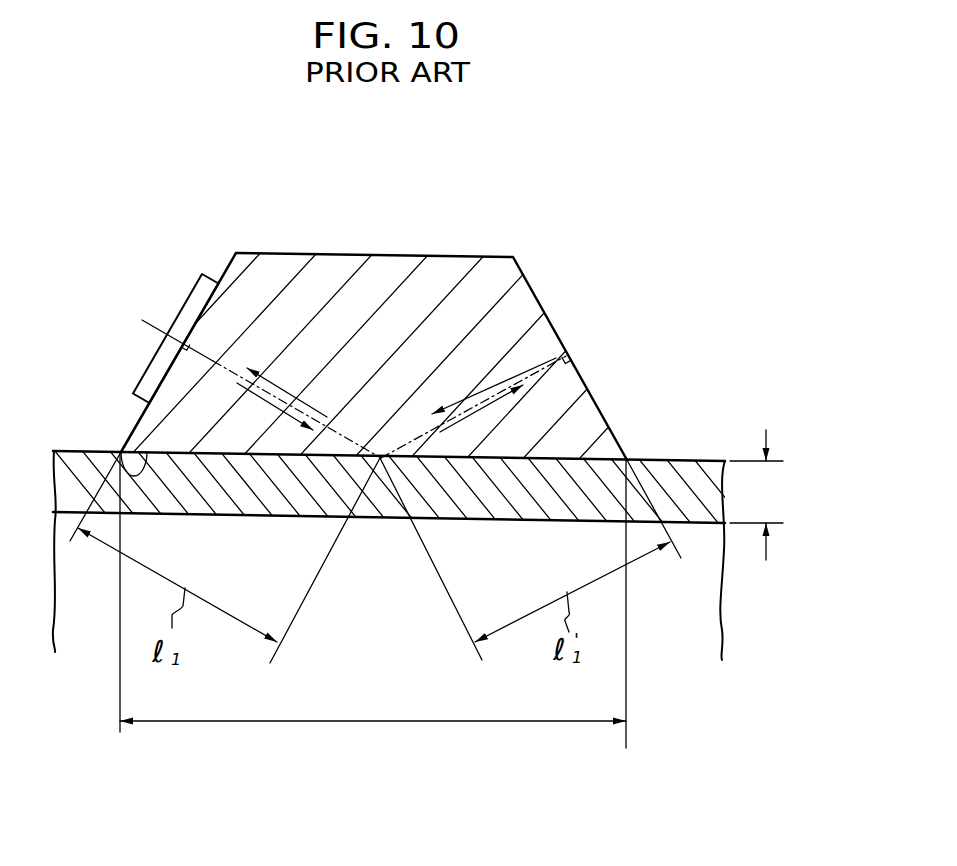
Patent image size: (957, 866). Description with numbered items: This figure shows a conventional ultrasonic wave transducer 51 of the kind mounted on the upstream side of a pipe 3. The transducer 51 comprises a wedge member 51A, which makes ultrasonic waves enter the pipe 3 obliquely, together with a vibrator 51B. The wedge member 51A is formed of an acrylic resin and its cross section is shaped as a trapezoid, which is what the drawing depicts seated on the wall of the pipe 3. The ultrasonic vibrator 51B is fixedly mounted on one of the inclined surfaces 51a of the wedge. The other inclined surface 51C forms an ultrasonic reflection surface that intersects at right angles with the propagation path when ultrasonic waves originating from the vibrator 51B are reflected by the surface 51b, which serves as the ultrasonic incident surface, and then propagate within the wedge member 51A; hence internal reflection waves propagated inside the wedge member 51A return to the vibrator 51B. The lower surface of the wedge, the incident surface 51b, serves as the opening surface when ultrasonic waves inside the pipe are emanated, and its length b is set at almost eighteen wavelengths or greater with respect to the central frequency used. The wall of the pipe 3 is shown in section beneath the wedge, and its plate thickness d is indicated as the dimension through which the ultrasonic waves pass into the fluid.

The ultrasonic wave transducer 51 is at (470, 254).
The wedge member 51A is at (340, 256).
The vibrator 51B is at (183, 297).
The other inclined surface 51C is at (524, 275).
The inclined surface 51a is at (233, 257).
The incident surface 51b is at (100, 450).
The pipe 3 is at (670, 460).
The length of the incident surface b is at (373, 722).
The plate thickness of the pipe d is at (767, 493).